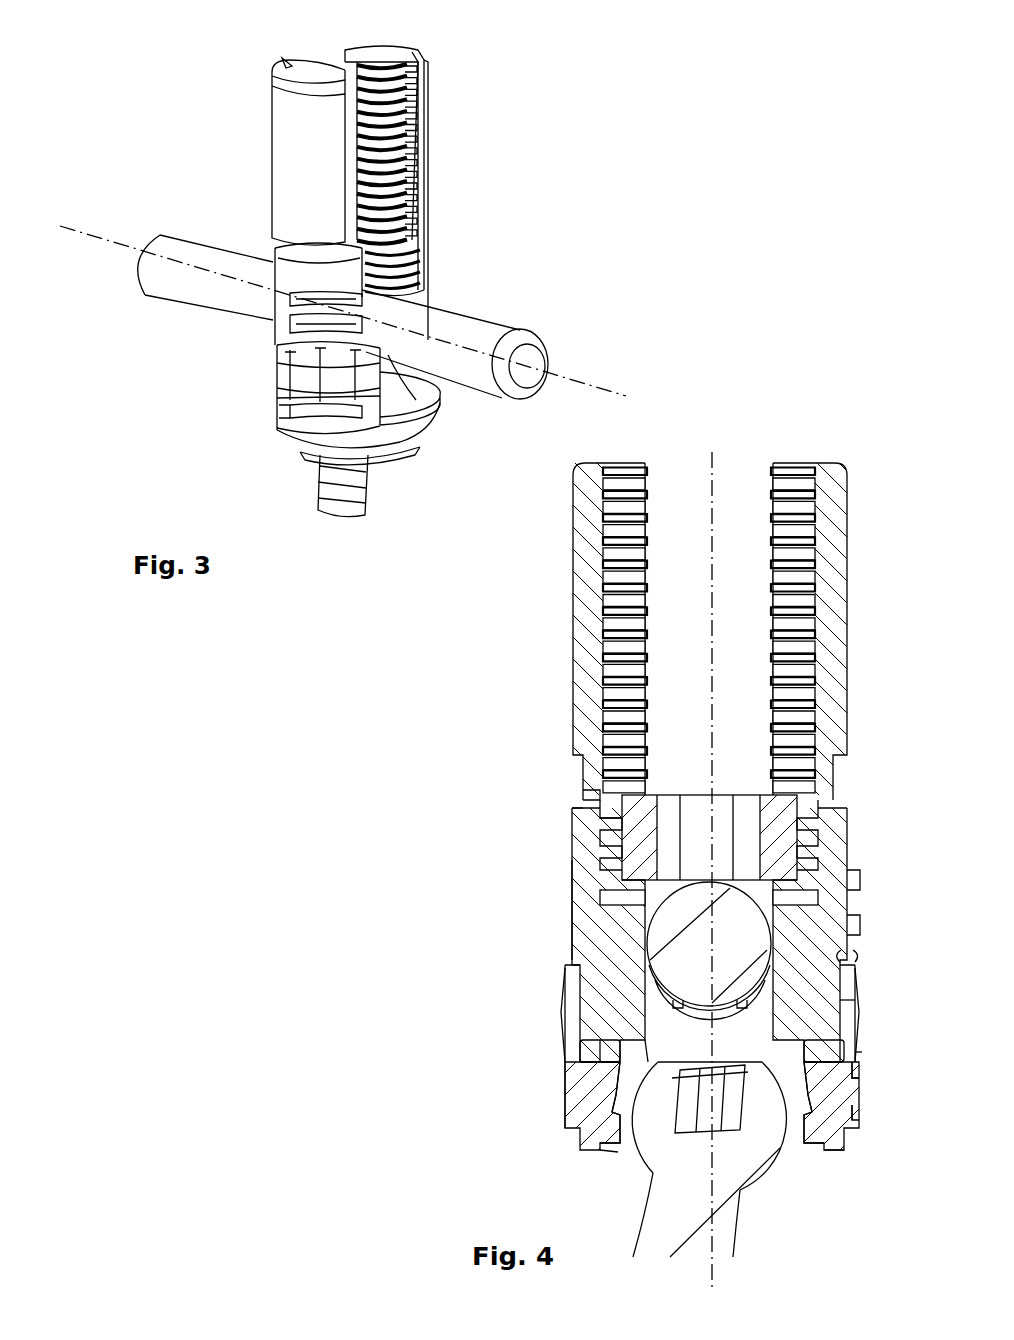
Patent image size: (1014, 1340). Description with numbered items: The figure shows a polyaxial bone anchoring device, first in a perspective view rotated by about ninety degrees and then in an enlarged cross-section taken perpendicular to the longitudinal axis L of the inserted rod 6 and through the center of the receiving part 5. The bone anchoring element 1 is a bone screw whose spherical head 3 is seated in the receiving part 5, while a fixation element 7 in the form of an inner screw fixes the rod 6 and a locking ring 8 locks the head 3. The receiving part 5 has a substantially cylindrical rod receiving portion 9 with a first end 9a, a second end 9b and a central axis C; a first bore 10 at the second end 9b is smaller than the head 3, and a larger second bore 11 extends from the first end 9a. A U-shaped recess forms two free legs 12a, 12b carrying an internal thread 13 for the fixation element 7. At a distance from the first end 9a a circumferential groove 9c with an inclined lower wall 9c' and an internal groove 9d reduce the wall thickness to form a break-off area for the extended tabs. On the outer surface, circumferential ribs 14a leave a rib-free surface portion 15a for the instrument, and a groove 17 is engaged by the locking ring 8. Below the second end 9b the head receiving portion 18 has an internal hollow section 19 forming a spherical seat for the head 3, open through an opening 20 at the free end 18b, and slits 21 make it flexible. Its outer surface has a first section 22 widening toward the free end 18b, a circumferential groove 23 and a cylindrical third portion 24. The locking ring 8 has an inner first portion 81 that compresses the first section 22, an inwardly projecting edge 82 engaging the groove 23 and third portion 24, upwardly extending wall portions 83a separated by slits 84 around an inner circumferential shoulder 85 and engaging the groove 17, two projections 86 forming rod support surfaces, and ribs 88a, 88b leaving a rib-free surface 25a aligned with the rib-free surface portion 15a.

In FIG. 3, the bone anchoring element 1 is at (368, 470).
In FIG. 4, the bone anchoring element 1 is at (742, 1212).
In FIG. 4, the head 3 is at (760, 1160).
In FIG. 3, the receiving part 5 is at (292, 275).
In FIG. 4, the receiving part 5 is at (850, 846).
In FIG. 3, the rod 6 is at (500, 322).
In FIG. 4, the rod 6 is at (752, 928).
In FIG. 3, the fixation element 7 is at (386, 244).
In FIG. 4, the fixation element 7 is at (646, 822).
In FIG. 3, the locking ring 8 is at (273, 400).
In FIG. 4, the locking ring 8 is at (846, 1118).
In FIG. 4, the rod receiving portion 9 is at (570, 890).
In FIG. 3, the first end 9a is at (407, 56).
In FIG. 4, the first end 9a is at (603, 482).
In FIG. 4, the second end 9b is at (590, 1043).
In FIG. 4, the circumferential groove 9c is at (548, 781).
In FIG. 4, the lower wall 9c' is at (531, 822).
In FIG. 4, the internal groove 9d is at (600, 832).
In FIG. 4, the first bore 10 is at (640, 1006).
In FIG. 4, the second bore 11 is at (600, 920).
In FIG. 3, the free leg 12a is at (276, 150).
In FIG. 3, the free leg 12b is at (428, 120).
In FIG. 3, the internal thread 13 is at (375, 88).
In FIG. 4, the internal thread 13 is at (766, 530).
In FIG. 3, the circumferential ribs 14a is at (302, 307).
In FIG. 3, the rib-free surface portion 15a is at (288, 296).
In FIG. 3, the groove 17 is at (318, 350).
In FIG. 4, the groove 17 is at (843, 962).
In FIG. 4, the head receiving portion 18 is at (612, 1088).
In FIG. 4, the free end 18b is at (810, 1150).
In FIG. 4, the internal hollow section 19 is at (597, 1102).
In FIG. 4, the opening 20 is at (826, 1152).
In FIG. 4, the slits 21 is at (620, 1060).
In FIG. 4, the first section 22 is at (862, 1106).
In FIG. 4, the circumferential groove 23 is at (826, 1128).
In FIG. 4, the third portion 24 is at (615, 1142).
In FIG. 3, the rib-free surface 25a is at (274, 412).
In FIG. 4, the first portion 81 is at (595, 1100).
In FIG. 4, the inwardly projecting edge 82 is at (593, 1143).
In FIG. 4, the upwardly extending wall portions 83a is at (580, 990).
In FIG. 4, the slits 84 is at (822, 1050).
In FIG. 4, the inner circumferential shoulder 85 is at (858, 1062).
In FIG. 3, the projections 86 is at (395, 372).
In FIG. 4, the projections 86 is at (843, 1030).
In FIG. 3, the ribs 88a is at (280, 413).
In FIG. 4, the ribs 88b is at (862, 1072).
In FIG. 4, the central axis C is at (707, 548).
In FIG. 3, the longitudinal axis L is at (588, 382).